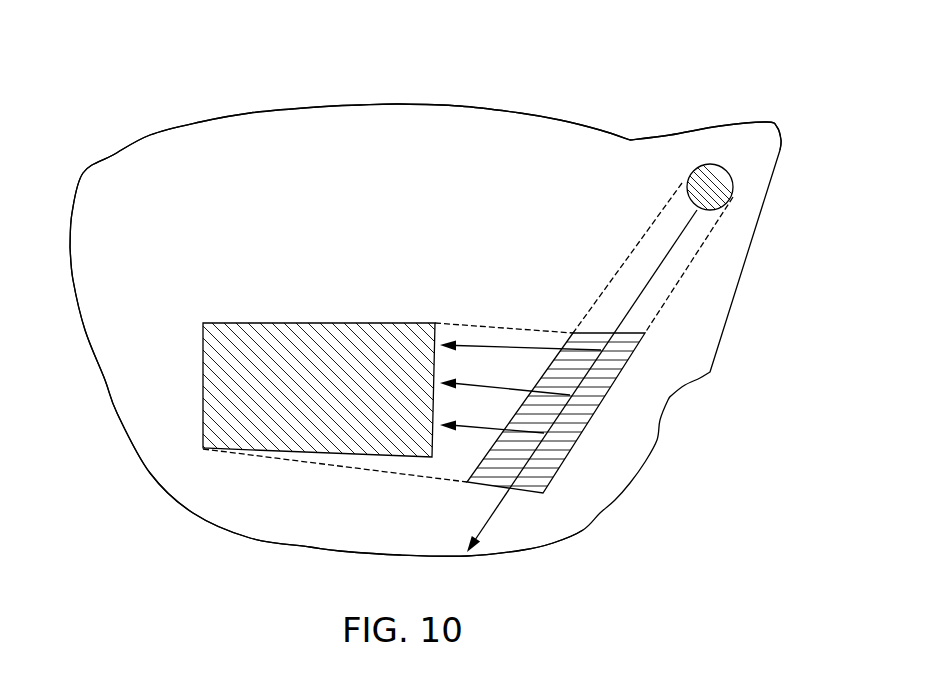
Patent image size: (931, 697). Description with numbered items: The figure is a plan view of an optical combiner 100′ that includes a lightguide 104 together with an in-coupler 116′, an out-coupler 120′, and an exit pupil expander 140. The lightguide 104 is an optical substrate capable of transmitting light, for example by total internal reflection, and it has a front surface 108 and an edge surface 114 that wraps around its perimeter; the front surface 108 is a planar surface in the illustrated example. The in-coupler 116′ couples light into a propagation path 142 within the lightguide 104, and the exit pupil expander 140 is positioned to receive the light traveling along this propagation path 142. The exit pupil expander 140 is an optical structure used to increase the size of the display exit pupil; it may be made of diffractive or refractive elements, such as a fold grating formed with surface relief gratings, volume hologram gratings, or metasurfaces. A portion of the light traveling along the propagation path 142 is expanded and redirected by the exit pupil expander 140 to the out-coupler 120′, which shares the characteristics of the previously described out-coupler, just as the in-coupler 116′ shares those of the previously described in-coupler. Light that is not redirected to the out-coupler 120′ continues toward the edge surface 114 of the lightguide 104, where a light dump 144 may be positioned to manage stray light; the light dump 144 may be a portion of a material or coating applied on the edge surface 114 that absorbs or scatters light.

The optical combiner 100' is at (425, 283).
The front surface 108 is at (138, 177).
The lightguide 104 is at (117, 412).
The edge surface 114 is at (272, 543).
The in-coupler 116′ is at (717, 177).
The propagation path 142 is at (660, 262).
The light dump 144 is at (527, 552).
The exit pupil expander 140 is at (562, 445).
The out-coupler 120′ is at (218, 430).